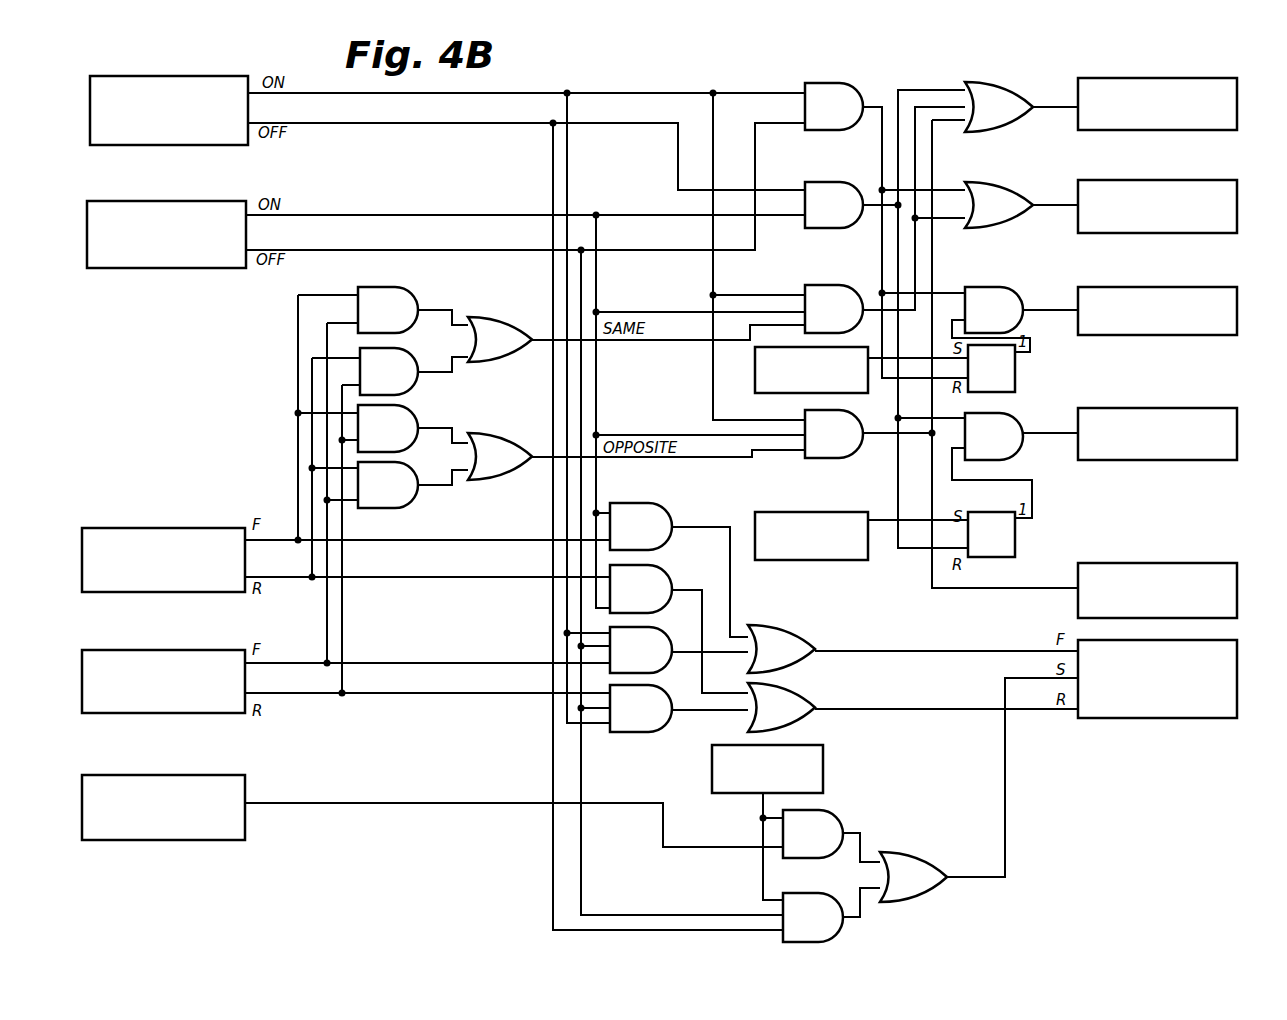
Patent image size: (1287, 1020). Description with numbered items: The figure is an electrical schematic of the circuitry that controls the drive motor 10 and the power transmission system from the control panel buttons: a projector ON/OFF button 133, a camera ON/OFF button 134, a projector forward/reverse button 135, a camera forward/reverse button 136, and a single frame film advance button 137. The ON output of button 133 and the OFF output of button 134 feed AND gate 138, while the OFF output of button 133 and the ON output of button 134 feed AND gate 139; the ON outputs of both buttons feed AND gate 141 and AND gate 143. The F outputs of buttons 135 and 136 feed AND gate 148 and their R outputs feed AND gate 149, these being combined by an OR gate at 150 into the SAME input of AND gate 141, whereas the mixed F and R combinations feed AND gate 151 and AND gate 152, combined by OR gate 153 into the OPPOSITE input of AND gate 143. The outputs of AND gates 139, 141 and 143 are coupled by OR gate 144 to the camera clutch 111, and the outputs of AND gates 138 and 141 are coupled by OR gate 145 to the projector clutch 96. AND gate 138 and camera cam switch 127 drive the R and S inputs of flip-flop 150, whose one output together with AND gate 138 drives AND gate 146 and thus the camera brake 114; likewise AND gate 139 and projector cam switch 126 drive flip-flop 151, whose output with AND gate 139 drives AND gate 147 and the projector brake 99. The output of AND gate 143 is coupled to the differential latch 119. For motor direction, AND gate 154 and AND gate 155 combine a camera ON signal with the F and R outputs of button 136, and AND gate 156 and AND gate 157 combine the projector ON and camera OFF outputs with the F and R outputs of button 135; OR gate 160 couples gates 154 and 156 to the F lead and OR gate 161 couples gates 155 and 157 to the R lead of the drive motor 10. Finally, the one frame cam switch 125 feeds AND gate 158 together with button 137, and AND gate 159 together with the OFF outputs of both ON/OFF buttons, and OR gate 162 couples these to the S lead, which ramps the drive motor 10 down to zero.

The projector ON/OFF button 133 is at (106, 77).
The camera ON/OFF button 134 is at (100, 200).
The projector forward/reverse button 135 is at (106, 649).
The camera forward/reverse button 136 is at (106, 527).
The single frame film advance button 137 is at (104, 774).
The AND gate 138 is at (860, 82).
The AND gate 139 is at (860, 181).
The AND gate 141 is at (860, 284).
The AND gate 143 is at (840, 459).
The OR gate 144 is at (996, 82).
The OR gate 145 is at (985, 232).
The AND gate 146 is at (994, 286).
The AND gate 147 is at (1022, 456).
The AND gate 148 is at (398, 288).
The AND gate 149 is at (418, 388).
The R-S flip-flop / OR gate 150 is at (1016, 378).
The R-S flip-flop / AND gate 151 is at (1016, 546).
The AND gate 152 is at (398, 509).
The OR gate 153 is at (478, 481).
The AND gate 154 is at (658, 504).
The AND gate 155 is at (658, 566).
The AND gate 156 is at (666, 634).
The AND gate 157 is at (640, 733).
The AND gate 158 is at (840, 815).
The AND gate 159 is at (842, 930).
The OR gate 160 is at (782, 624).
The OR gate 161 is at (810, 690).
The OR gate 162 is at (940, 892).
The one frame cam switch 125 is at (824, 770).
The projector cam switch 126 is at (836, 561).
The camera cam switch 127 is at (760, 394).
The camera clutch 111 is at (1238, 122).
The projector clutch 96 is at (1238, 220).
The camera brake 114 is at (1238, 326).
The projector brake 99 is at (1180, 461).
The differential latch 119 is at (1238, 584).
The drive motor 10 is at (1238, 669).